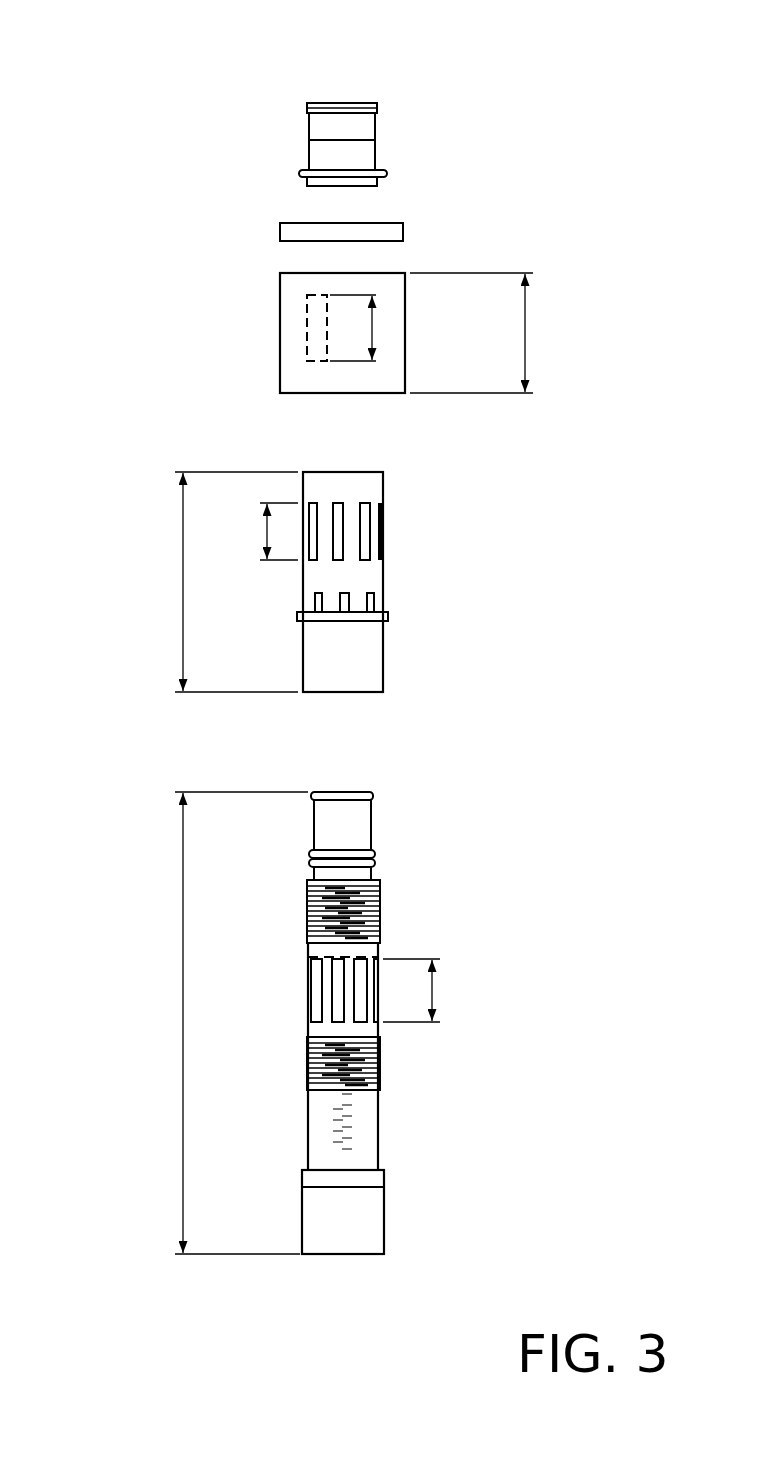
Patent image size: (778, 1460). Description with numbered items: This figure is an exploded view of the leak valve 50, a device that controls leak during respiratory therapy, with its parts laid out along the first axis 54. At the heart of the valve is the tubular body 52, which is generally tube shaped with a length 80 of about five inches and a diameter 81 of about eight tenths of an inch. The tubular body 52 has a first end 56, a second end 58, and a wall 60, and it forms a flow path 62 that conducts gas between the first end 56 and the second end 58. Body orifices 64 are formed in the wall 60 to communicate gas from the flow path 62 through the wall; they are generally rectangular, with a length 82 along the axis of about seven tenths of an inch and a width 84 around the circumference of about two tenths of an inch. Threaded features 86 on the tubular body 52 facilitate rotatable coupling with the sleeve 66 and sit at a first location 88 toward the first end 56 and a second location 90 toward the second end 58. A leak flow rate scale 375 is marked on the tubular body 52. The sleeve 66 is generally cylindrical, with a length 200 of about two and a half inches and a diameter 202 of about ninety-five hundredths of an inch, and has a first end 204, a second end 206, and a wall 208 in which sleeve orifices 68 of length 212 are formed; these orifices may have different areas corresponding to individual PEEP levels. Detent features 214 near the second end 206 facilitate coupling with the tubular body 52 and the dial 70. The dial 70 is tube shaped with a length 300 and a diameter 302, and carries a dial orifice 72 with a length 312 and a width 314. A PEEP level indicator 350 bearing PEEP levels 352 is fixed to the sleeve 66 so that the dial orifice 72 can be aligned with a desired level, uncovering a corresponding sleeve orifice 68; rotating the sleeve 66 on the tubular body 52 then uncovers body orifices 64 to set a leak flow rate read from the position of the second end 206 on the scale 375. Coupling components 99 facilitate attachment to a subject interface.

The leak valve 50 is at (118, 102).
The first axis 54 is at (343, 90).
The coupling components 99 is at (377, 152).
The PEEP levels 352 is at (326, 229).
The PEEP level indicator 350 is at (403, 232).
The dial diameter 302 is at (442, 285).
The dial orifice 72 is at (306, 320).
The dial 70 is at (405, 333).
The dial orifice length 312 is at (353, 328).
The dial orifice width 314 is at (362, 375).
The dial length 300 is at (471, 333).
The sleeve first end 204 is at (383, 472).
The sleeve diameter 202 is at (268, 488).
The sleeve orifices 68 is at (365, 532).
The sleeve wall 208 is at (383, 588).
The sleeve coupling features 214 is at (315, 603).
The sleeve 66 is at (383, 655).
The sleeve second end 206 is at (383, 692).
The sleeve length 200 is at (227, 582).
The sleeve orifice length 212 is at (267, 531).
The flow path 62 is at (321, 776).
The tubular body first end 56 is at (373, 796).
The first location 88 is at (389, 897).
The body coupling features 86 is at (307, 901).
The tubular body wall 60 is at (307, 953).
The body orifices 64 is at (316, 988).
The body orifice length 82 is at (411, 990).
The body orifice width 84 is at (365, 1029).
The second location 90 is at (388, 1068).
The tubular body diameter 81 is at (410, 1116).
The leak flow rate scale 375 is at (311, 1147).
The tubular body 52 is at (384, 1198).
The tubular body second end 58 is at (384, 1254).
The tubular body length 80 is at (232, 1023).